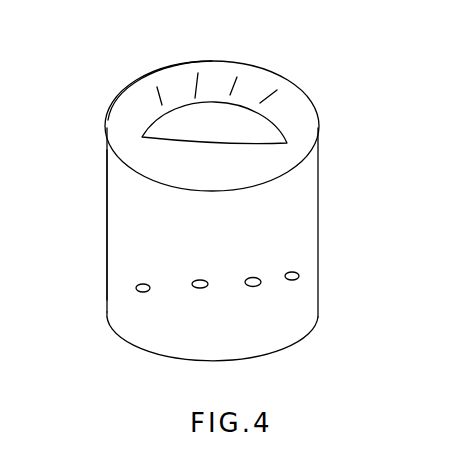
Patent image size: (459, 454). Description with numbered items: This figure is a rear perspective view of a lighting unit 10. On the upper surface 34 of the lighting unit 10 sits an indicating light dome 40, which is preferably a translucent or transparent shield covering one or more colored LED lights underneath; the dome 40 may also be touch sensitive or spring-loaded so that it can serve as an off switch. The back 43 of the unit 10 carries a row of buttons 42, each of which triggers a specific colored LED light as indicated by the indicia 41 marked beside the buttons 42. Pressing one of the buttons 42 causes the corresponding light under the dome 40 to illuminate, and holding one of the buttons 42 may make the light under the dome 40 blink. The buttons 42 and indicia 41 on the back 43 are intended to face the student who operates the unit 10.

The lighting unit 10 is at (322, 148).
The upper surface 34 is at (127, 107).
The indicating light dome 40 is at (263, 127).
The back 43 is at (157, 220).
The indicia 41 is at (135, 266).
The buttons 42 is at (140, 293).